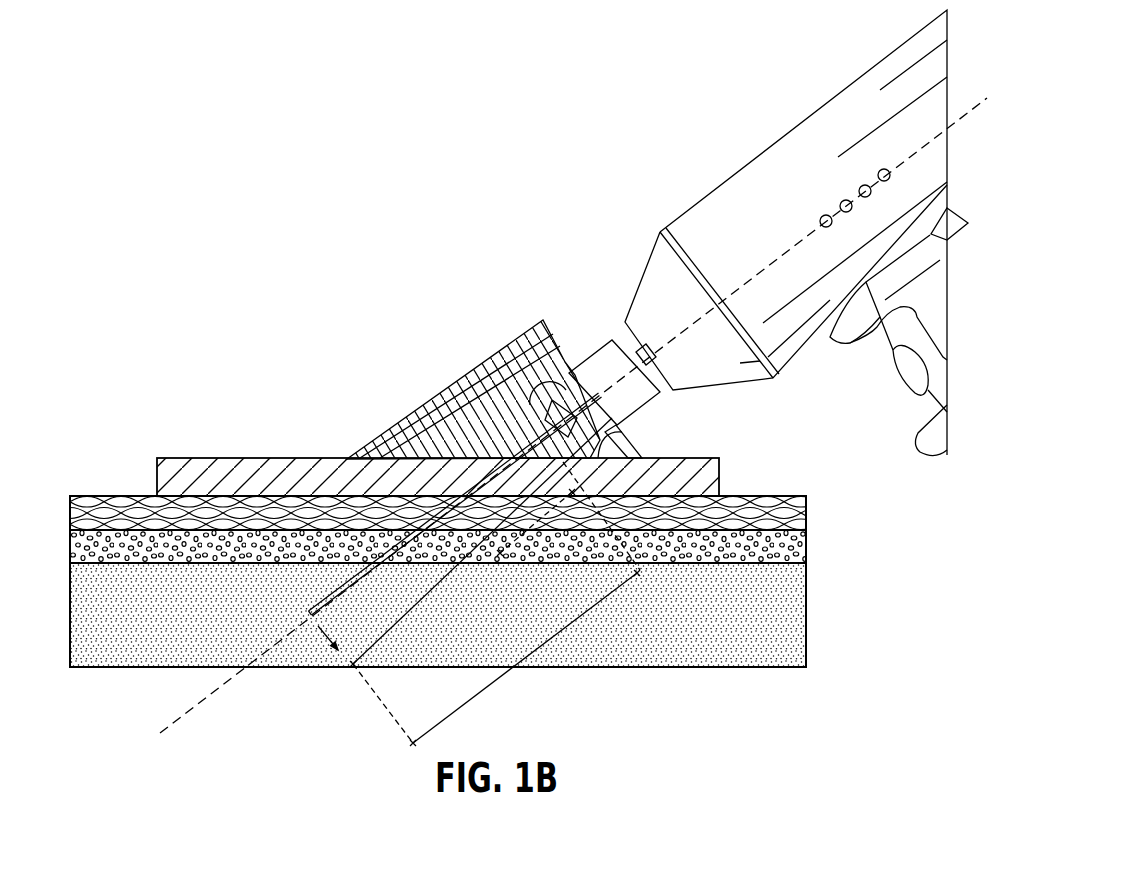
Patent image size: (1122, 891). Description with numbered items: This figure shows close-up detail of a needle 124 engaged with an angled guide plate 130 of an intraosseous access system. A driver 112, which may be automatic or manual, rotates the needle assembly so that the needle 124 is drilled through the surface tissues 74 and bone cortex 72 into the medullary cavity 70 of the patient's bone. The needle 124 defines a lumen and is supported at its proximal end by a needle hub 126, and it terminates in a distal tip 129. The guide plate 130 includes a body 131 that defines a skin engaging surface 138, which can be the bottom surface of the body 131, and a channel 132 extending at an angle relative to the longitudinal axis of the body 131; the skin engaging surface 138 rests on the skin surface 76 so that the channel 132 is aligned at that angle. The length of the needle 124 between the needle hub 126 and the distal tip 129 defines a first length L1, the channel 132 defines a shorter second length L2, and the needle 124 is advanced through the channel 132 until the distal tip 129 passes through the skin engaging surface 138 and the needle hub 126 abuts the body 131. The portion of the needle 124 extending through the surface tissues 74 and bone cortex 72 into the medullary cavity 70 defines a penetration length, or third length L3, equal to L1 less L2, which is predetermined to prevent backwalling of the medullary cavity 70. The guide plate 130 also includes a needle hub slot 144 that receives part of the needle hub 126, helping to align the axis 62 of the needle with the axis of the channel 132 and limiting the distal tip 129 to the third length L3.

The driver 112 is at (814, 130).
The needle hub 126 is at (530, 345).
The angled guide plate 130 is at (388, 417).
The body 131 is at (473, 398).
The channel 132 is at (420, 457).
The skin engaging surface 138 is at (273, 497).
The needle hub slot 144 is at (625, 441).
The skin surface 76 is at (752, 496).
The surface tissues 74 is at (795, 517).
The bone cortex 72 is at (805, 548).
The medullary cavity 70 is at (797, 623).
The axis of the needle 62 is at (175, 720).
The needle 124 is at (362, 590).
The distal tip 129 is at (317, 623).
The first length L1 is at (470, 705).
The second length L2 is at (550, 533).
The third length L3 is at (420, 617).